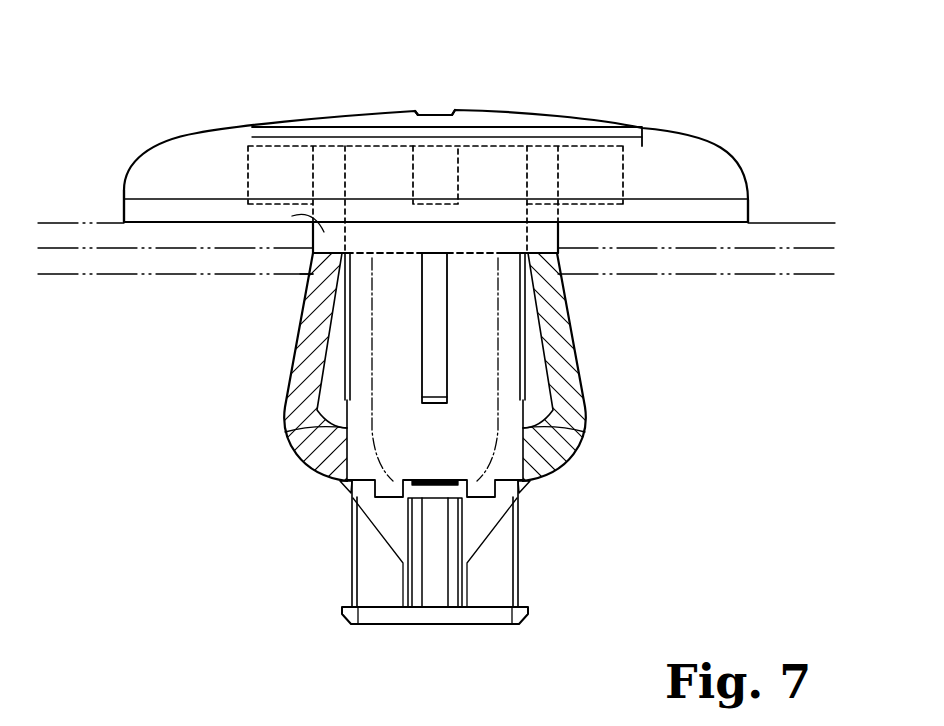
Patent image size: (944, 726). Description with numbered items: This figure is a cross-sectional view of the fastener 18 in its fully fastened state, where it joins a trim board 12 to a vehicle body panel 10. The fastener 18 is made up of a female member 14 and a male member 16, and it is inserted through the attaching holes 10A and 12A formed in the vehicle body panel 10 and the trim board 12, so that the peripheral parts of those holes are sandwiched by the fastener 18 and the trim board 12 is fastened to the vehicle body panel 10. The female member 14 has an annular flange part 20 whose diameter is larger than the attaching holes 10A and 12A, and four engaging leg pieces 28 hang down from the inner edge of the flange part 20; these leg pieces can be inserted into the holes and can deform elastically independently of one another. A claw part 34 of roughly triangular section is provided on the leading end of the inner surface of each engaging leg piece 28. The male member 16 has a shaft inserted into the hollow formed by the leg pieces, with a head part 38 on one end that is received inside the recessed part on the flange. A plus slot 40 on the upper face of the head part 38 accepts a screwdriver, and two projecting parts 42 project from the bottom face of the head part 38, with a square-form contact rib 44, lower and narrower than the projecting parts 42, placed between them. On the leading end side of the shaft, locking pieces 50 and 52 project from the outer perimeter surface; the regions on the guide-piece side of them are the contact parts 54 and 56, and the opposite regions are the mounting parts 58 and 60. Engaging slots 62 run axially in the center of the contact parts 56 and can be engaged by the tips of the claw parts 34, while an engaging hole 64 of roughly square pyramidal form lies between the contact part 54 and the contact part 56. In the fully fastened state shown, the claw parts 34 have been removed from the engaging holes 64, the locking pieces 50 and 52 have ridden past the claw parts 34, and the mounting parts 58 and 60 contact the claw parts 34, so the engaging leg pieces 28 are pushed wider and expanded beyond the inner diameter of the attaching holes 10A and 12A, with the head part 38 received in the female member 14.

The vehicle body panel 10 is at (813, 275).
The attaching hole 10A is at (307, 293).
The trim board 12 is at (810, 223).
The attaching hole 12A is at (292, 216).
The female member 14 is at (718, 145).
The male member 16 is at (538, 113).
The fastener 18 is at (727, 60).
The flange part 20 is at (730, 172).
The engaging leg piece 28 is at (298, 385).
The claw part 34 is at (340, 484).
The head part 38 is at (344, 116).
The plus slot 40 is at (453, 112).
The projecting part 42 is at (270, 177).
The contact rib 44 is at (452, 165).
The locking piece 50 is at (350, 499).
The locking piece 52 is at (425, 481).
The contact part 54 is at (350, 534).
The contact part 56 is at (420, 560).
The mounting part 58 is at (300, 447).
The mounting part 60 is at (443, 417).
The engaging slot 62 is at (443, 572).
The engaging hole 64 is at (388, 540).